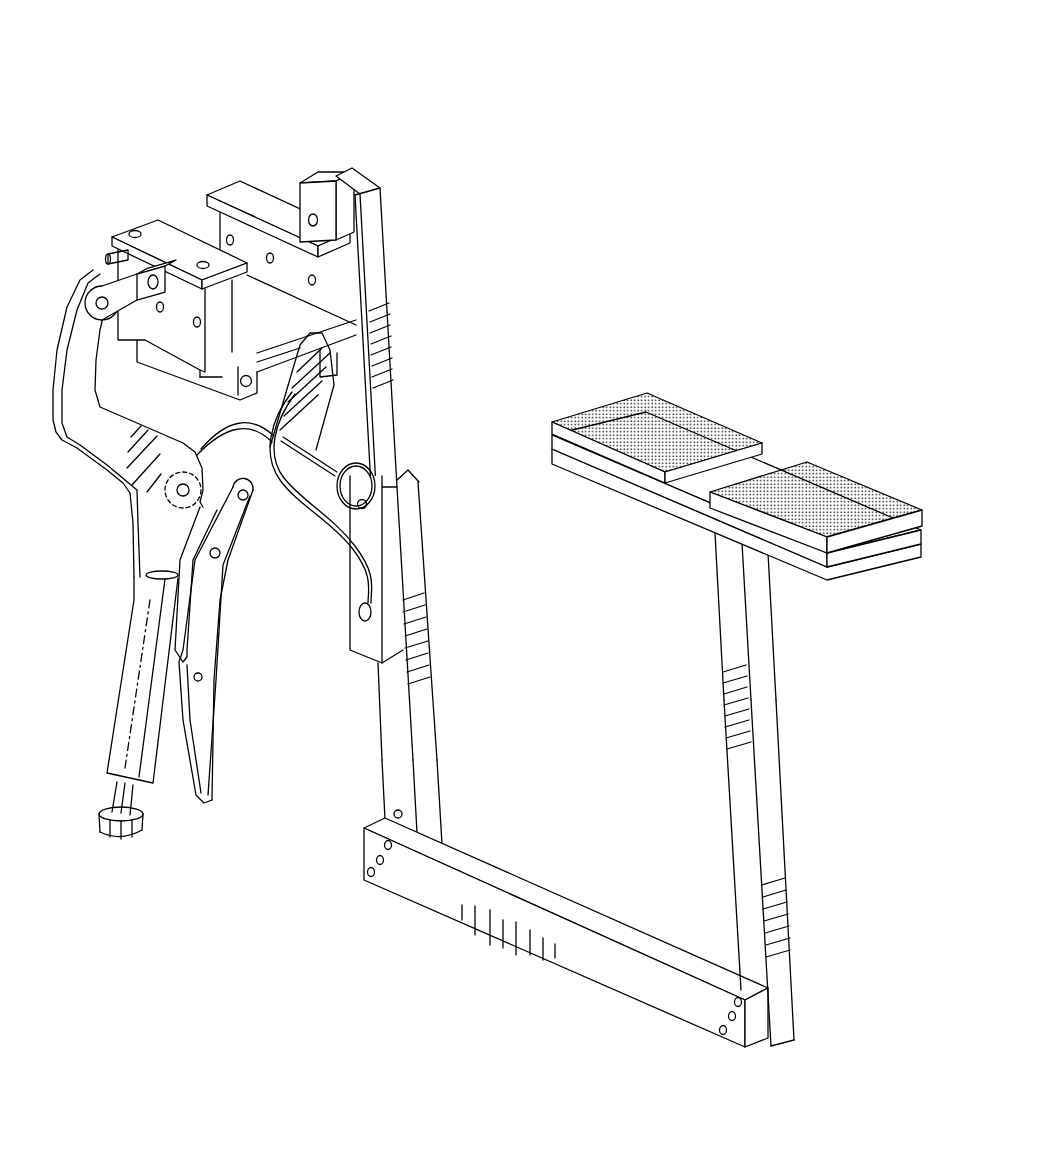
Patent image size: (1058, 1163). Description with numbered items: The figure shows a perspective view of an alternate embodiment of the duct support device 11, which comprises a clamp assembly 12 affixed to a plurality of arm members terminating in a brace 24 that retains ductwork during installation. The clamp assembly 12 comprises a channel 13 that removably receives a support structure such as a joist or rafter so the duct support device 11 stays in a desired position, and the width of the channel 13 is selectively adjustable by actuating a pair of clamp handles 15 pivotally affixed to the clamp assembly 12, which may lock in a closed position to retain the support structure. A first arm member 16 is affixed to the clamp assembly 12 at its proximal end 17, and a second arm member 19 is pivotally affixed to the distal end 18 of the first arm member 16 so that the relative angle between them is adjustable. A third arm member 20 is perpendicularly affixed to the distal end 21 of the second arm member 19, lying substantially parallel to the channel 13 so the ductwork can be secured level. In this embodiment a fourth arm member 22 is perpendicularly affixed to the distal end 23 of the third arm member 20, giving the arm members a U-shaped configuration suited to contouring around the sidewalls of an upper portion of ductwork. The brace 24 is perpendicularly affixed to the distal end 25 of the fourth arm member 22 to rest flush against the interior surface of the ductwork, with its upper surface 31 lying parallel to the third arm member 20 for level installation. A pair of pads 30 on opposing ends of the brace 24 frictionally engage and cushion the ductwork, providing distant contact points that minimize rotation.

The duct support device 11 is at (454, 92).
The clamp assembly 12 is at (110, 253).
The channel 13 is at (218, 238).
The clamp handles 15 is at (77, 429).
The first arm member 16 is at (387, 298).
The proximal end 17 is at (381, 188).
The distal end 18 is at (352, 638).
The second arm member 19 is at (428, 735).
The third arm member 20 is at (442, 904).
The distal end 21 is at (432, 835).
The fourth arm member 22 is at (778, 786).
The distal end 23 is at (722, 1012).
The brace 24 is at (860, 565).
The distal end 25 is at (753, 578).
The pads 30 is at (670, 420).
The upper surface 31 is at (765, 463).